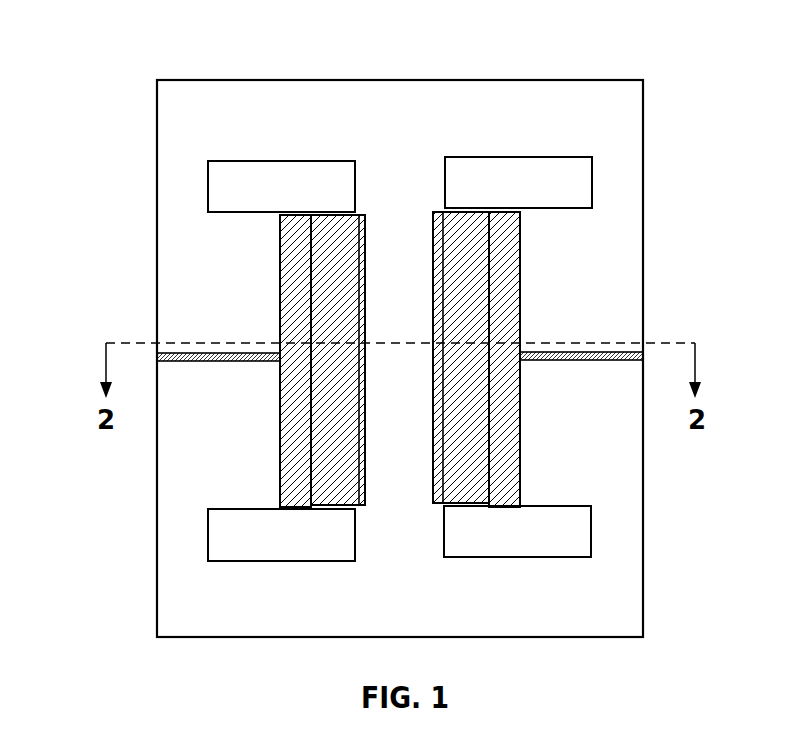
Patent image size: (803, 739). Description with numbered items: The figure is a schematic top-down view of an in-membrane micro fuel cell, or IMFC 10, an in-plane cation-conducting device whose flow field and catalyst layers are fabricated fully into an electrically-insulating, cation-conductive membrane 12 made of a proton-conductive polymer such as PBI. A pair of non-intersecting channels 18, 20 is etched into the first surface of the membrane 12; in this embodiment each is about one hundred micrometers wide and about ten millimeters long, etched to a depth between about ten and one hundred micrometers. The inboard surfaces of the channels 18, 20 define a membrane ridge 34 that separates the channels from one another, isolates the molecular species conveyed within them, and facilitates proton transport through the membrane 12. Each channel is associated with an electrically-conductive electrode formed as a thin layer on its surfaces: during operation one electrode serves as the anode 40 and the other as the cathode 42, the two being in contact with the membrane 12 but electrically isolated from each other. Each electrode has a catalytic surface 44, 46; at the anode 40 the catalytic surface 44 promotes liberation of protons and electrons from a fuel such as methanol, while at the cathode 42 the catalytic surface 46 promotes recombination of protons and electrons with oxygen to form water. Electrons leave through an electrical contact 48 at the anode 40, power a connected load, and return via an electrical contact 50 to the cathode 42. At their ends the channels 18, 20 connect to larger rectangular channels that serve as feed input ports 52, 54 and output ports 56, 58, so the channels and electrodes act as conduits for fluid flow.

The in-membrane micro fuel cell 10 is at (117, 44).
The cation-conductive membrane 12 is at (644, 175).
The first channel 18 is at (360, 215).
The second channel 20 is at (434, 212).
The membrane ridge 34 is at (406, 545).
The anode 40 is at (280, 262).
The cathode 42 is at (520, 272).
The catalytic surface of anode 44 is at (326, 440).
The catalytic surface of cathode 46 is at (468, 440).
The electrical contact 48 is at (233, 354).
The electrical contact 50 is at (575, 353).
The feed input port 52 is at (258, 172).
The feed input port 54 is at (547, 166).
The output port 56 is at (252, 523).
The output port 58 is at (550, 520).